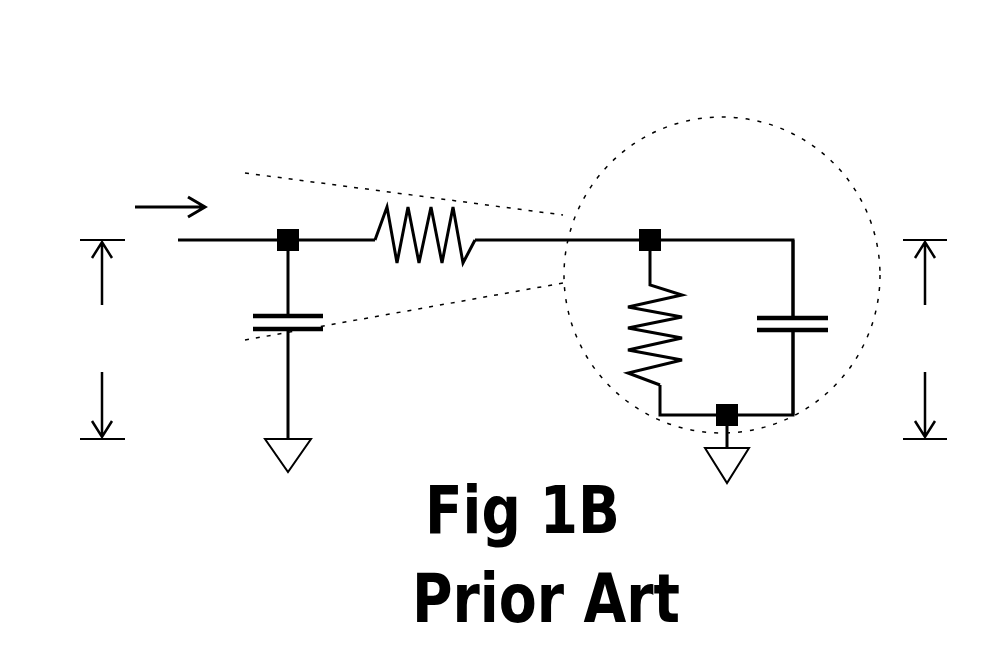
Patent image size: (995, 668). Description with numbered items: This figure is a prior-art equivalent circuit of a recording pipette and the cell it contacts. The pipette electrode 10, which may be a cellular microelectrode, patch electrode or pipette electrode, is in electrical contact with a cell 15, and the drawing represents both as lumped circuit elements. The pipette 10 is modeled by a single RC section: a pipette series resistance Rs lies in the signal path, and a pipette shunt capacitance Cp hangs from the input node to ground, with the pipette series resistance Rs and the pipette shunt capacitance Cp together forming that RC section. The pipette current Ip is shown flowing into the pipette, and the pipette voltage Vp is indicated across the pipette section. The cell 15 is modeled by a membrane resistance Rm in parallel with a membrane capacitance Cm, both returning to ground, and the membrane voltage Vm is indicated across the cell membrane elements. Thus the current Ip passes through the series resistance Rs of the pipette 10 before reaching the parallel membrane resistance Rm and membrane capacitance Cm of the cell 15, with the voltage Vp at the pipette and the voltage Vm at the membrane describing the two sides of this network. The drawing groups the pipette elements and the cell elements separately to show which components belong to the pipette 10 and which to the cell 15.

The pipette electrode 10 is at (331, 160).
The cell 15 is at (758, 106).
The pipette series resistance Rs is at (427, 211).
The pipette shunt capacitance Cp is at (309, 339).
The membrane resistance Rm is at (623, 312).
The membrane capacitance Cm is at (818, 327).
The pipette current Ip is at (142, 193).
The pipette voltage Vp is at (108, 339).
The membrane voltage Vm is at (934, 339).